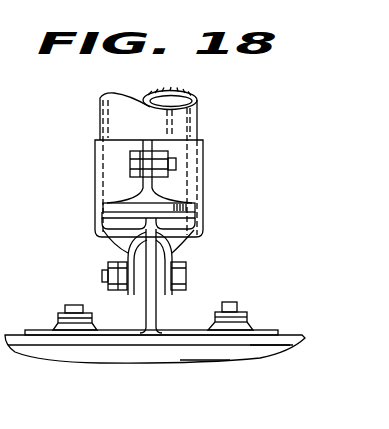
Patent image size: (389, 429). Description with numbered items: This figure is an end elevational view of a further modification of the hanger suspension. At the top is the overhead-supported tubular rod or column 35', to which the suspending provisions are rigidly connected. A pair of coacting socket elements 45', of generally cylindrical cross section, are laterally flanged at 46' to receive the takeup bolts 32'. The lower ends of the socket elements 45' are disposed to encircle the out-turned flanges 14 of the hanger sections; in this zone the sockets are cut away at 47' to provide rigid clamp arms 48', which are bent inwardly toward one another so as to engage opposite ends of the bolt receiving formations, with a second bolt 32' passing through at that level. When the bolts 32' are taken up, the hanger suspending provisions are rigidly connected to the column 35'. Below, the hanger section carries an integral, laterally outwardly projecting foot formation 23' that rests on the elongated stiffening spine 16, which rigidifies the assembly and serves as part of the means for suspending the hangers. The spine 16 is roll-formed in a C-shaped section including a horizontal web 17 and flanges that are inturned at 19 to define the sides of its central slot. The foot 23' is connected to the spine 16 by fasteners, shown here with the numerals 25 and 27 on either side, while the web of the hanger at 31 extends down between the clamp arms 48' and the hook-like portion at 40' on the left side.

The tubular rod or column 35' is at (123, 161).
The lateral flange 46' is at (173, 160).
The takeup bolt 32' is at (137, 225).
The socket element 45' is at (173, 188).
The cut-away portion 47' is at (173, 206).
The out-turned flange 14 is at (138, 238).
The jaw 40' is at (108, 263).
The clamp arm 48' is at (197, 263).
The web 31 is at (138, 296).
The bolt 25 is at (70, 307).
The bolt 27 is at (240, 312).
The foot formation 23' is at (173, 319).
The inturned flange portion 19 is at (298, 338).
The stiffening spine 16 is at (215, 370).
The horizontal web 17 is at (257, 350).